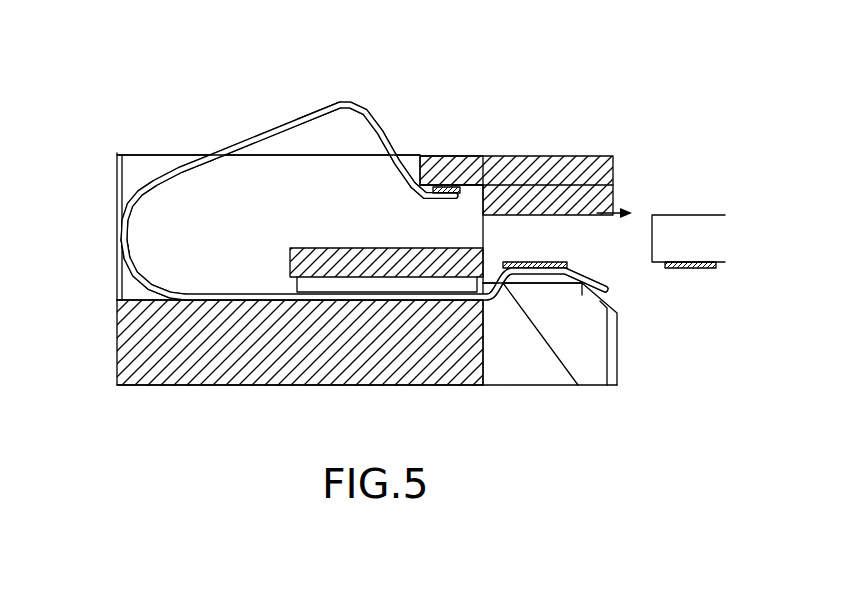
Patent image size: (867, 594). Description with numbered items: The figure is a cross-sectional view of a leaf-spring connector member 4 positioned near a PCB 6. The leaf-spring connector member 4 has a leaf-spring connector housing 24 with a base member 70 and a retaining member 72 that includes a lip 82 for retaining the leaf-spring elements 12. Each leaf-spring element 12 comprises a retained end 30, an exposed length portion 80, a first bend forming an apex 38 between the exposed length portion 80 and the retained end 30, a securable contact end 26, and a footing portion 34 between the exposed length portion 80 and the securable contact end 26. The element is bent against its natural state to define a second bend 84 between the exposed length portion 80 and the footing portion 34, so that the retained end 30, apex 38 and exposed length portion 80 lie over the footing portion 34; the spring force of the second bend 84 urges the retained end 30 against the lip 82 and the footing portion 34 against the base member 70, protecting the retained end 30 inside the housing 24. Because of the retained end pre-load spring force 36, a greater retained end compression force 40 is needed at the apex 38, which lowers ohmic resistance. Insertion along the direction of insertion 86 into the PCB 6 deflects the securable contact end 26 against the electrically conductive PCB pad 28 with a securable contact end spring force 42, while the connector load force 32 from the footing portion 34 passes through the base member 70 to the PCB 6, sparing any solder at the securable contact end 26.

The leaf-spring connector member 4 is at (247, 405).
The PCB 6 is at (697, 227).
The leaf-spring element 12 is at (213, 153).
The leaf-spring connector housing 24 is at (171, 386).
The securable contact end 26 is at (598, 277).
The electrically conductive PCB pad 28 is at (700, 271).
The retained end 30 is at (428, 197).
The connector load force 32 is at (194, 284).
The footing portion 34 is at (248, 293).
The retained end pre-load spring force 36 is at (428, 206).
The apex 38 is at (313, 112).
The retained end compression force 40 is at (345, 93).
The securable contact end spring force 42 is at (545, 289).
The base member 70 is at (130, 342).
The retaining member 72 is at (546, 164).
The exposed length portion 80 is at (207, 153).
The lip 82 is at (443, 168).
The second bend 84 is at (132, 236).
The direction of insertion 86 is at (616, 210).